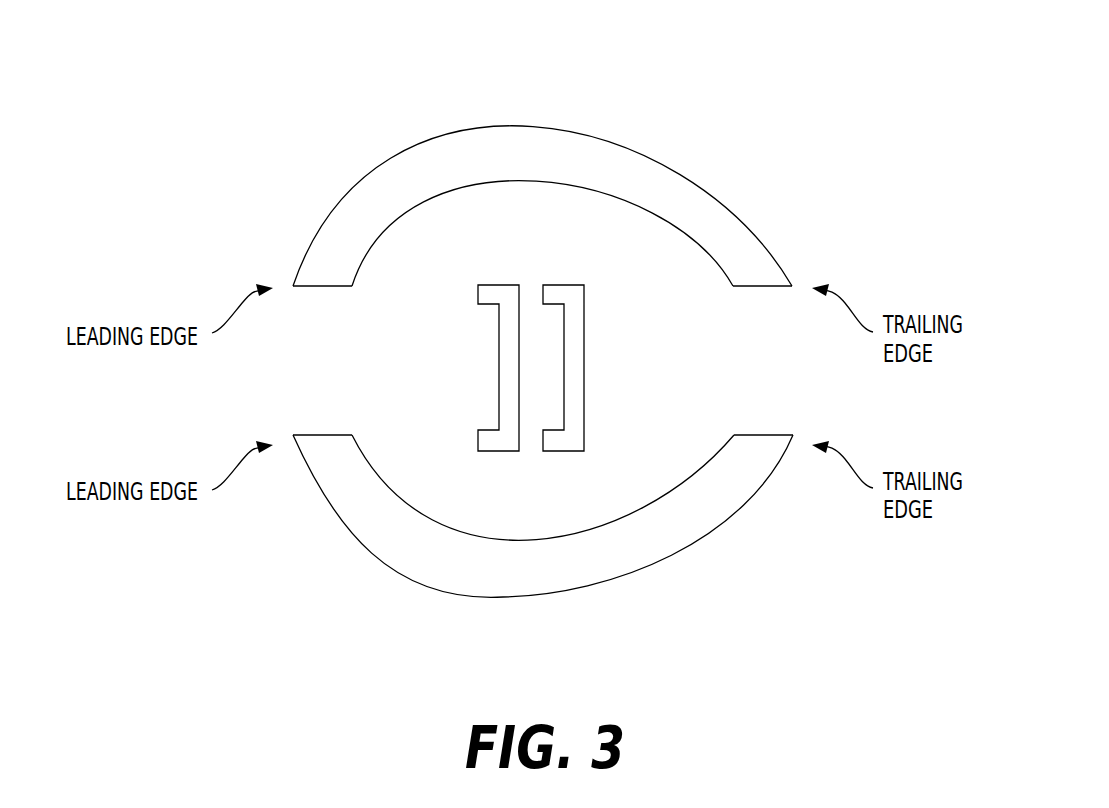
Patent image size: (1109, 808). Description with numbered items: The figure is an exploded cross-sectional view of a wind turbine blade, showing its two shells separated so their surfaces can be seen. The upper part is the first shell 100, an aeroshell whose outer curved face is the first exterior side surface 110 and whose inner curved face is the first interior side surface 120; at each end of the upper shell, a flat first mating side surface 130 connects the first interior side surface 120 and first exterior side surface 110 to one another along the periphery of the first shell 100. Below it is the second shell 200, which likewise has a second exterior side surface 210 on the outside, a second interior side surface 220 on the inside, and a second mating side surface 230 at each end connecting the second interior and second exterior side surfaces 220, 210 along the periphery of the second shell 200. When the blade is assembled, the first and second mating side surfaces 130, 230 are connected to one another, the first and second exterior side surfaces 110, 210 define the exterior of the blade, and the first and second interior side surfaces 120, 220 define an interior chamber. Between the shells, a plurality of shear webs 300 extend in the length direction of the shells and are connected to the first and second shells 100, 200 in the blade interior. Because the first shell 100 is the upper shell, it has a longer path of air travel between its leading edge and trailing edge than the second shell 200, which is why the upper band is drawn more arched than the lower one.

The first shell 100 is at (558, 208).
The first exterior side surface 110 is at (520, 125).
The first interior side surface 120 is at (457, 187).
The first mating side surface 130 is at (322, 286).
The second shell 200 is at (527, 532).
The second exterior side surface 210 is at (683, 548).
The second interior side surface 220 is at (615, 518).
The second mating side surface 230 is at (323, 435).
The shear webs 300 is at (563, 285).